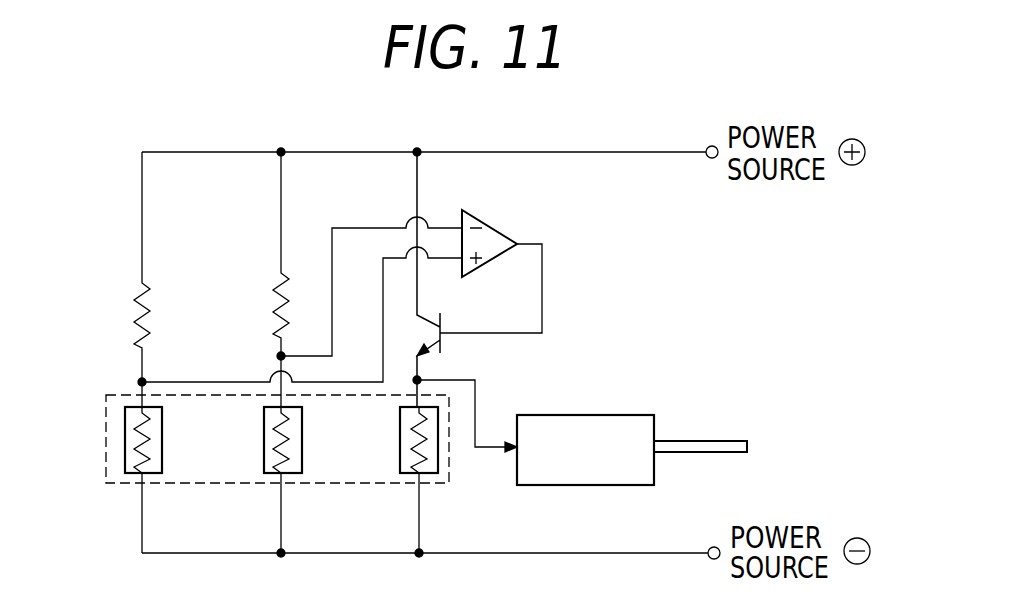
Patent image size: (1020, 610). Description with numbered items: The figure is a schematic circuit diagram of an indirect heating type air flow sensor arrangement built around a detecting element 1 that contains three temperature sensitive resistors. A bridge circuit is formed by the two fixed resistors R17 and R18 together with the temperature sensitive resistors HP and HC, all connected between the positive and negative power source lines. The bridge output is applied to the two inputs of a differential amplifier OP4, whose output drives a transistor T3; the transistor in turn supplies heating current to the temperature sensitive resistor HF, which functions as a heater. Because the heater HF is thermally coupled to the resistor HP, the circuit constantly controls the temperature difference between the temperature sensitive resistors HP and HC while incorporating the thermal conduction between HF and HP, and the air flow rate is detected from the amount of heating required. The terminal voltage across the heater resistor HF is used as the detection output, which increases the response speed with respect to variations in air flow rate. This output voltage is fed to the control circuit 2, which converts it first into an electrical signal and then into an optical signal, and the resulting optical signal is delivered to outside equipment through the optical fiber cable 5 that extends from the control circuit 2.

The detecting element 1 is at (103, 413).
The control circuit 2 is at (630, 415).
The optical fiber cable 5 is at (703, 441).
The resistor R17 is at (116, 279).
The resistor R18 is at (255, 279).
The differential amplifier OP4 is at (502, 226).
The transistor T3 is at (446, 318).
The temperature sensitive resistor HC is at (133, 475).
The temperature sensitive resistor HP is at (270, 475).
The temperature sensitive resistor HF is at (437, 475).